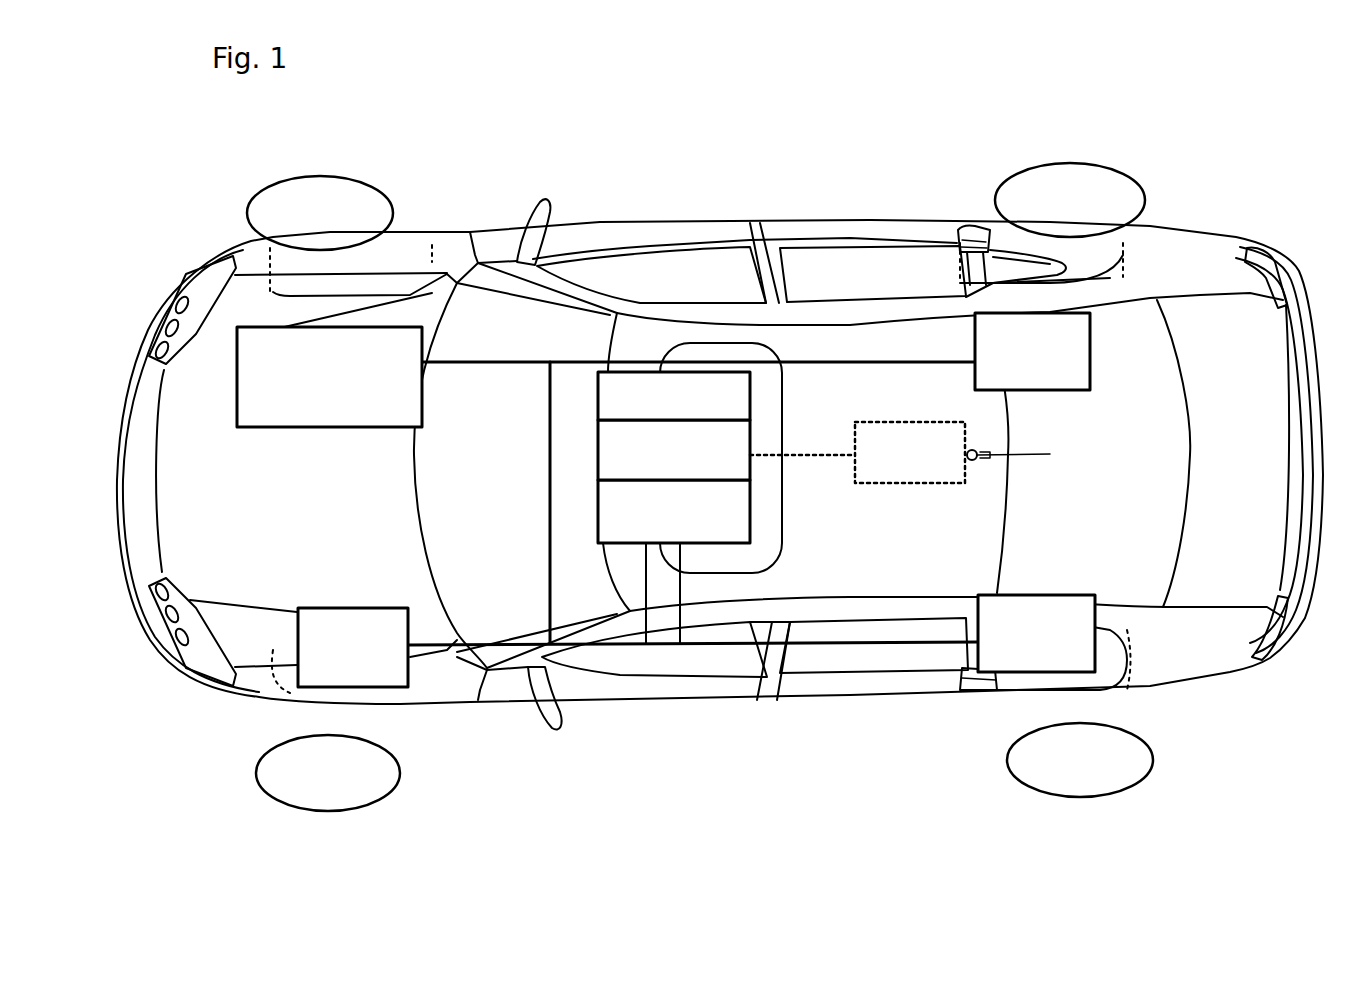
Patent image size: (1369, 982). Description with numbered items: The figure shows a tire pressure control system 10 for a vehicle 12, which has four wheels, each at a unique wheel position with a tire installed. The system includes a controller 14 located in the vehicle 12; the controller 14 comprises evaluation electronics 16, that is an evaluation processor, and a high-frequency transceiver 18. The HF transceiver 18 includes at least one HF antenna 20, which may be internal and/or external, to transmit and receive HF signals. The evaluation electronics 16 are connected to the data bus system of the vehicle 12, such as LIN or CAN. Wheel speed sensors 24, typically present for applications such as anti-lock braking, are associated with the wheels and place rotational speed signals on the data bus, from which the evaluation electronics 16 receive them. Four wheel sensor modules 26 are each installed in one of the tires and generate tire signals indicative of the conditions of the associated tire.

The tire pressure control system 10 is at (876, 132).
The vehicle 12 is at (610, 222).
The controller 14 is at (752, 514).
The evaluation electronics 16 is at (600, 527).
The HF transceiver 18 is at (597, 455).
The HF antenna 20 is at (597, 405).
The wheel speed sensor 24 is at (300, 428).
The wheel sensor module 26 is at (327, 177).